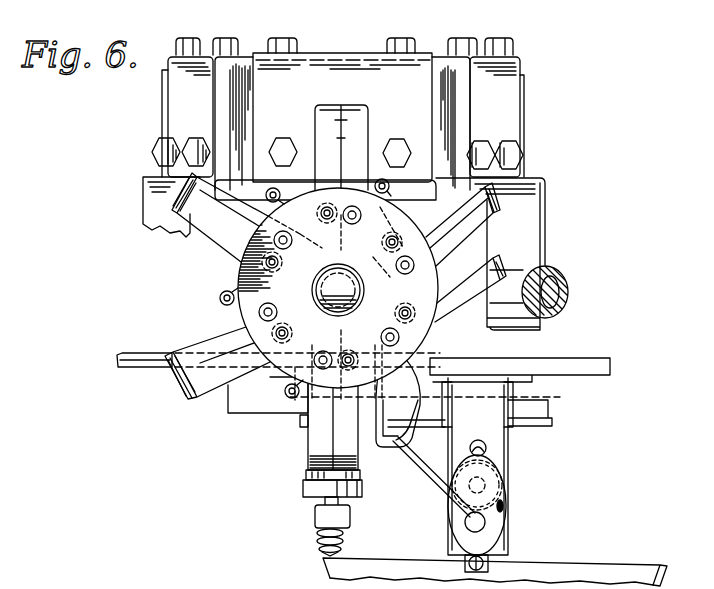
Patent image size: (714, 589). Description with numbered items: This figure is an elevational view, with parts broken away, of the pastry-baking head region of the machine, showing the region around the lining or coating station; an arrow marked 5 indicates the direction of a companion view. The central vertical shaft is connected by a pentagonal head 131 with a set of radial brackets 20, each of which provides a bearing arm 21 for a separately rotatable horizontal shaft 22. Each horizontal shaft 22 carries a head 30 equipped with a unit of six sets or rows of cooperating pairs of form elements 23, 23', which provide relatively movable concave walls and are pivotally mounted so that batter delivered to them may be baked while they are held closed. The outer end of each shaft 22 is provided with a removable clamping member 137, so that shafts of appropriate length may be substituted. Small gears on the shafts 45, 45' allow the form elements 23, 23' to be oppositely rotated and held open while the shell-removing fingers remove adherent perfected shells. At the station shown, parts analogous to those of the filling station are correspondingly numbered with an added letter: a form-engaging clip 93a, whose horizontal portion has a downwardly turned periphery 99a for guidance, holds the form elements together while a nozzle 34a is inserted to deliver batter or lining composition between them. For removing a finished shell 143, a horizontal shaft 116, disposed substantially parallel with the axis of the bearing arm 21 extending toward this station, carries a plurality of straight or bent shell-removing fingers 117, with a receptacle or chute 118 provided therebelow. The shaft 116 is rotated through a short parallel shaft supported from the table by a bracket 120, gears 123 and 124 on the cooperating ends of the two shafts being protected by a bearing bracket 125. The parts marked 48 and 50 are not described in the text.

The pentagonal head 131 is at (238, 72).
The radial bracket 20 is at (328, 82).
The head 30 is at (384, 124).
The bearing arm 21 is at (520, 272).
The horizontal shaft 22 is at (314, 310).
The removable clamping member 137 is at (348, 310).
The shaft 45 is at (318, 246).
The shaft 45' is at (286, 266).
The pivot pin 50 is at (224, 292).
The plate 48 is at (278, 358).
The form element 23 is at (312, 407).
The form element 23' is at (431, 363).
The form-engaging clip 93a is at (314, 466).
The downwardly turned periphery 99a is at (318, 487).
The nozzle 34a is at (330, 473).
The shell 143 is at (413, 420).
The bracket 120 is at (497, 415).
The gear 124 is at (500, 477).
The bearing bracket 125 is at (505, 512).
The horizontal shaft 116 is at (480, 524).
The gear 123 is at (497, 545).
The shell-removing finger 117 is at (423, 470).
The receptacle or chute 118 is at (622, 572).
The view direction arrow 5 is at (612, 283).